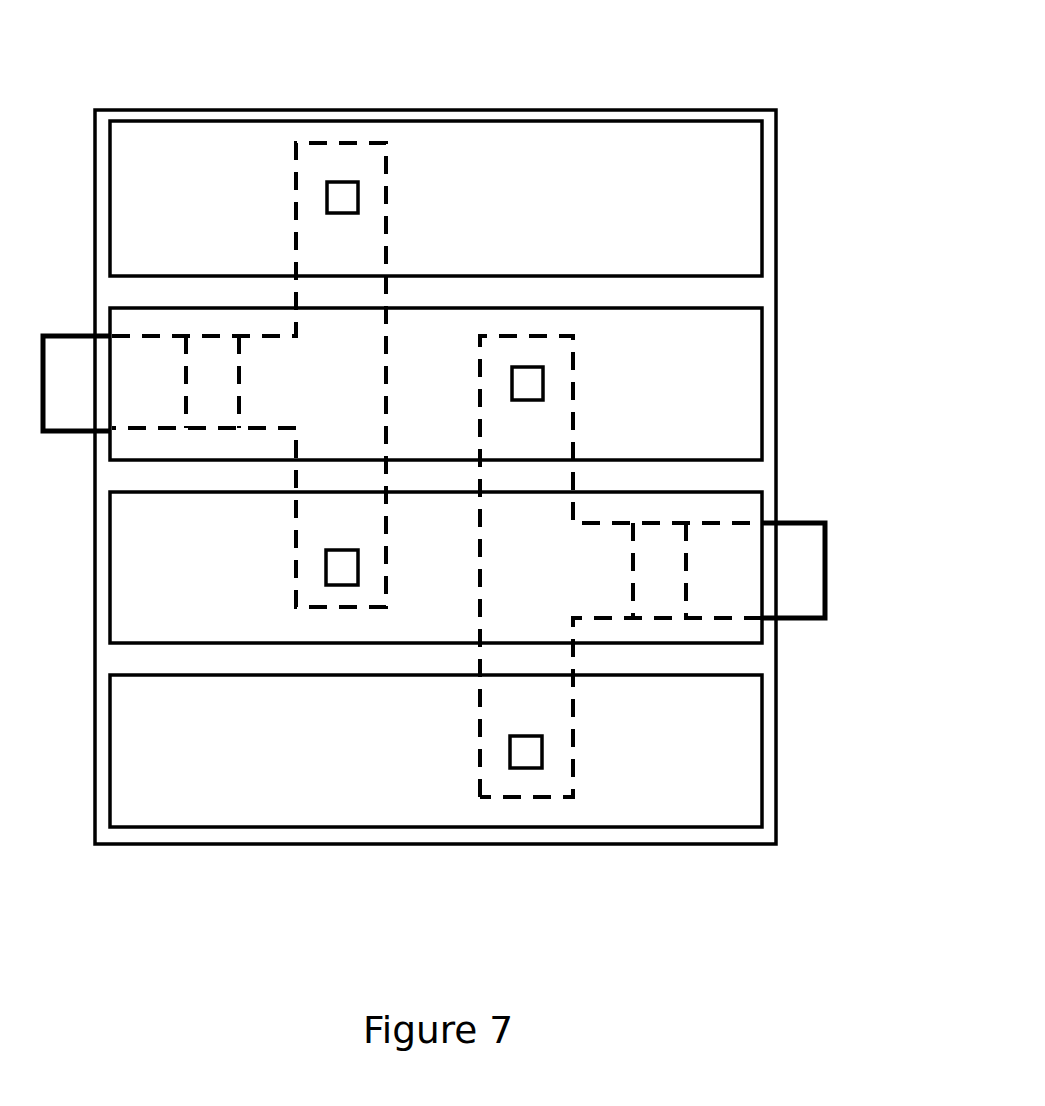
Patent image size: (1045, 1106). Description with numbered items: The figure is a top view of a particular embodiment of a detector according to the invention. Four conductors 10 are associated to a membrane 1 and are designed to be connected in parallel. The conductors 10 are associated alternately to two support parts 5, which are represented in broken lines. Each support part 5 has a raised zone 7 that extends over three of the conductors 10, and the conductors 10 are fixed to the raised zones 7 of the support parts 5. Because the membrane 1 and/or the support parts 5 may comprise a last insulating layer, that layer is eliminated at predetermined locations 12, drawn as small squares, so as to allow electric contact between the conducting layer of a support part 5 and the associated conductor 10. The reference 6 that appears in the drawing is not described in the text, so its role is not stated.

The membrane 1 is at (763, 467).
The support part 5 is at (388, 175).
The connection to right pad 6 is at (688, 558).
The raised zone 7 is at (580, 620).
The conductor 10 is at (727, 180).
The predetermined location 12 is at (340, 200).